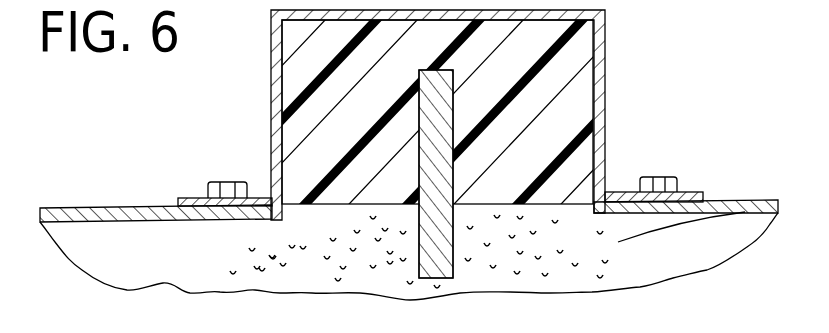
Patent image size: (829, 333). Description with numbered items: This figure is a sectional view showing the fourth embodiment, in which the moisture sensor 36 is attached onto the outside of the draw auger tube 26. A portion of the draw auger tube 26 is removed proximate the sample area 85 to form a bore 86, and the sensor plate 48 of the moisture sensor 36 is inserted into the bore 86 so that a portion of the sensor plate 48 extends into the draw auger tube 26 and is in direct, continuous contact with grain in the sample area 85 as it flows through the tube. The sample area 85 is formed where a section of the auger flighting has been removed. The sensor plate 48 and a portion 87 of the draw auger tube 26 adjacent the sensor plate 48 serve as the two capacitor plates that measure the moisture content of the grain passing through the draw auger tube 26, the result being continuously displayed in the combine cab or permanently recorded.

The draw auger tube 26 is at (115, 207).
The moisture sensor 36 is at (600, 56).
The sensor plate 48 is at (434, 107).
The sample area 85 is at (758, 201).
The bore 86 is at (552, 204).
The portion of the draw auger tube 87 is at (178, 199).